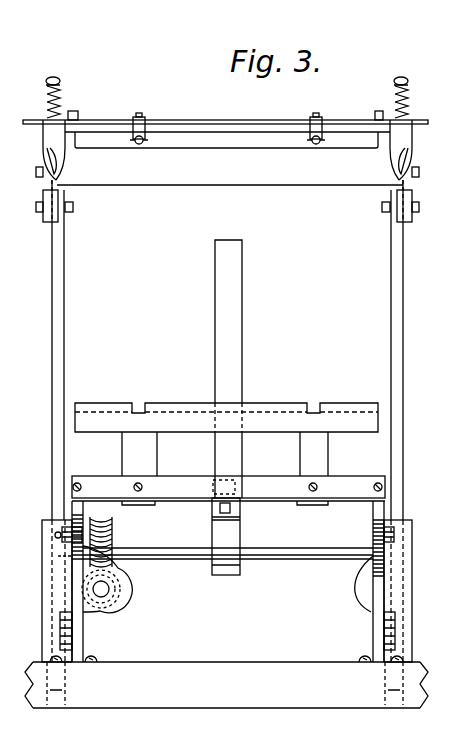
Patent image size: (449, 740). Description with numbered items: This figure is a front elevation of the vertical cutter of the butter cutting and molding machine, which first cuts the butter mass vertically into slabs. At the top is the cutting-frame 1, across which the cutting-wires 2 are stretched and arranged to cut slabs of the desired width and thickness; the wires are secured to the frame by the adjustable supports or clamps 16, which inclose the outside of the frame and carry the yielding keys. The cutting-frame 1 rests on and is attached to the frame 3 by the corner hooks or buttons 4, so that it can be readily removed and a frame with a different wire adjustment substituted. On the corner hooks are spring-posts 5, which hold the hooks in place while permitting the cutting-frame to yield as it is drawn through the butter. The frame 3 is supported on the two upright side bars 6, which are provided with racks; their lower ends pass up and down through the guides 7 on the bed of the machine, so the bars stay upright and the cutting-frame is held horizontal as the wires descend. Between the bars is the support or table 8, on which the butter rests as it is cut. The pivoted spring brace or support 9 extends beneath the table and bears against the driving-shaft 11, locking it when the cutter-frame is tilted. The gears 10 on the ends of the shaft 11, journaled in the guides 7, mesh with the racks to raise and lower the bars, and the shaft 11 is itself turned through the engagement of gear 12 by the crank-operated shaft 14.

The cutting-frame 1 is at (237, 127).
The cutting-wires 2 is at (318, 115).
The frame 3 is at (419, 146).
The corner hooks or buttons 4 is at (33, 118).
The spring-posts 5 is at (57, 79).
The upright side bars 6 is at (52, 347).
The guides 7 is at (42, 603).
The support or table 8 is at (158, 405).
The spring brace or support 9 is at (233, 354).
The gears 10 is at (58, 557).
The driving-shaft 11 is at (200, 555).
The gear 12 is at (112, 536).
The shaft 14 is at (104, 588).
The adjustable supports or clamps 16 is at (142, 127).